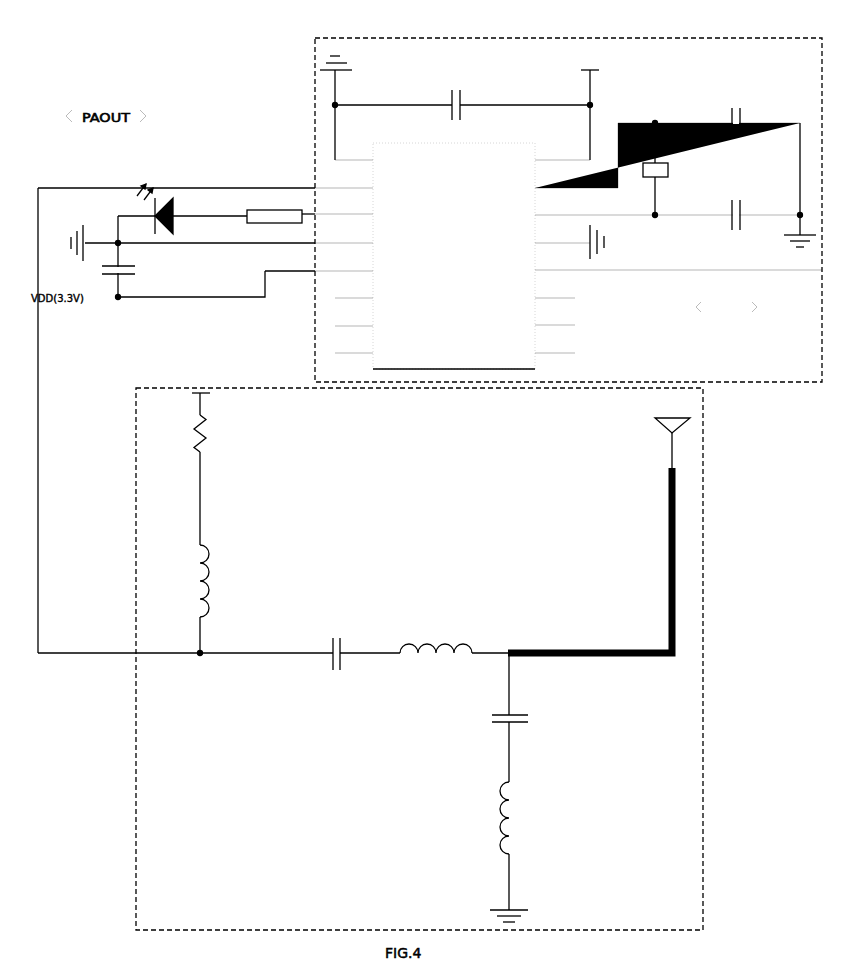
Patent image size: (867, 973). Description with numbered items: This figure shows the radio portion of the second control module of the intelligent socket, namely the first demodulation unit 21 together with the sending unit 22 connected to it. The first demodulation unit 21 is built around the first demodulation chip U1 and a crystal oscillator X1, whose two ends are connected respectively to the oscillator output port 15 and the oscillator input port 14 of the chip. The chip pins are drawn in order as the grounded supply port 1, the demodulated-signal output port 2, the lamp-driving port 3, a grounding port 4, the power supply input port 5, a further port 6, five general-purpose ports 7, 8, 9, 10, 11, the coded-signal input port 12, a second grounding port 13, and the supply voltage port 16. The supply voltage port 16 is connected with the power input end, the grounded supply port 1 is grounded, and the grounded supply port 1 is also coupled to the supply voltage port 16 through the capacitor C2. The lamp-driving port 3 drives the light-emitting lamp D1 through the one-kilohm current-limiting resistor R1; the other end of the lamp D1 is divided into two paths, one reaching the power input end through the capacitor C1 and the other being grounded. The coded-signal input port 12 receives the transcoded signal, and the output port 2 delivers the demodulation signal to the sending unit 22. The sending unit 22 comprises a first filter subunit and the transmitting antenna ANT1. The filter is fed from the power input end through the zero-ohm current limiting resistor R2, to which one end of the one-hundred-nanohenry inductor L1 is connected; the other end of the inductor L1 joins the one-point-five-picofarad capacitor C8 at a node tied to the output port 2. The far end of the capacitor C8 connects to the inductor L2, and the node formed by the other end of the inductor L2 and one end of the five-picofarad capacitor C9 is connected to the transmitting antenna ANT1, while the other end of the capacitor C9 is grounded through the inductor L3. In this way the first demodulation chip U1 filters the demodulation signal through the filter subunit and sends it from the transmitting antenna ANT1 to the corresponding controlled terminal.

The first demodulation unit 21 is at (314, 50).
The sending unit 22 is at (302, 385).
The first demodulation chip U1 is at (454, 249).
The LED lamp D1 is at (182, 207).
The current-limiting resistor R1 is at (273, 218).
The capacitor C1 is at (126, 271).
The capacitor C2 is at (462, 97).
The crystal oscillator X1 is at (665, 169).
The current limiting resistor R2 is at (210, 433).
The inductor L1 is at (222, 581).
The capacitor C8 is at (340, 657).
The inductor L2 is at (440, 658).
The capacitor C9 is at (516, 719).
The inductor L3 is at (524, 818).
The antenna ANT1 is at (599, 528).
The U1 pin 1 PVSS 1 is at (354, 154).
The U1 pin 2 PAOUT 2 is at (344, 182).
The U1 pin 3 PB3 3 is at (344, 208).
The U1 pin 4 GND 4 is at (344, 237).
The U1 pin 5 VDD 5 is at (344, 265).
The U1 pin 6 VPP 6 is at (354, 292).
The U1 pin 7 PA0 7 is at (354, 320).
The U1 pin 8 PA1 8 is at (354, 347).
The U1 pin 9 PA2 9 is at (555, 347).
The U1 pin 10 PA3 10 is at (556, 319).
The U1 pin 11 PA4 11 is at (555, 292).
The U1 pin 12 PB0 12 is at (678, 264).
The U1 pin 13 GND 13 is at (562, 237).
The U1 pin 14 XTLIN 14 is at (667, 209).
The U1 pin 15 XTLOUT 15 is at (667, 155).
The U1 pin 16 VCC 16 is at (562, 154).